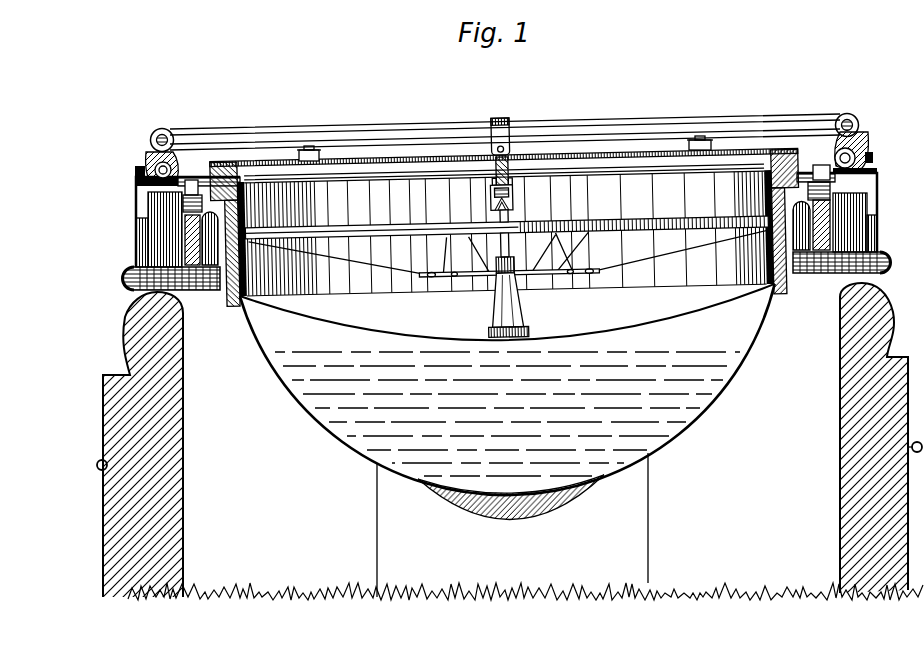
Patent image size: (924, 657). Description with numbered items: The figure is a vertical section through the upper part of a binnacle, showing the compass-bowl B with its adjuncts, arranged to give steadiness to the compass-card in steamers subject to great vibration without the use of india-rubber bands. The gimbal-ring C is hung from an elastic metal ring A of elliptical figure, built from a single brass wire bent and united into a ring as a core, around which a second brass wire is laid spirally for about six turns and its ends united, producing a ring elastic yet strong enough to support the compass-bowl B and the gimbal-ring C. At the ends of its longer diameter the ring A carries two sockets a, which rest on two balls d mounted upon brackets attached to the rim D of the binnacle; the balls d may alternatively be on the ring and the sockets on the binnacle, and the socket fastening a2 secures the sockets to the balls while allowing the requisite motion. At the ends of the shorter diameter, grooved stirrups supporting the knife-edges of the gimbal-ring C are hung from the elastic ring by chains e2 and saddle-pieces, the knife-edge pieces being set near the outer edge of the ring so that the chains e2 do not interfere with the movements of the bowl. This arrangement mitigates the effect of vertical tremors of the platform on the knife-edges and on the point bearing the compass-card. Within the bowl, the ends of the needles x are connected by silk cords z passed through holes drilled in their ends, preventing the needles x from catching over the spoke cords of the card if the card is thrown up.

The elastic metal ring A is at (505, 131).
The chains e2 is at (500, 126).
The sockets a is at (862, 138).
The pulley bracket a2 is at (874, 160).
The balls d is at (835, 156).
The rim of the binnacle D is at (505, 227).
The gimbal-ring C is at (506, 232).
The compass-bowl B is at (510, 405).
The needles x is at (580, 275).
The silk cords z is at (592, 271).